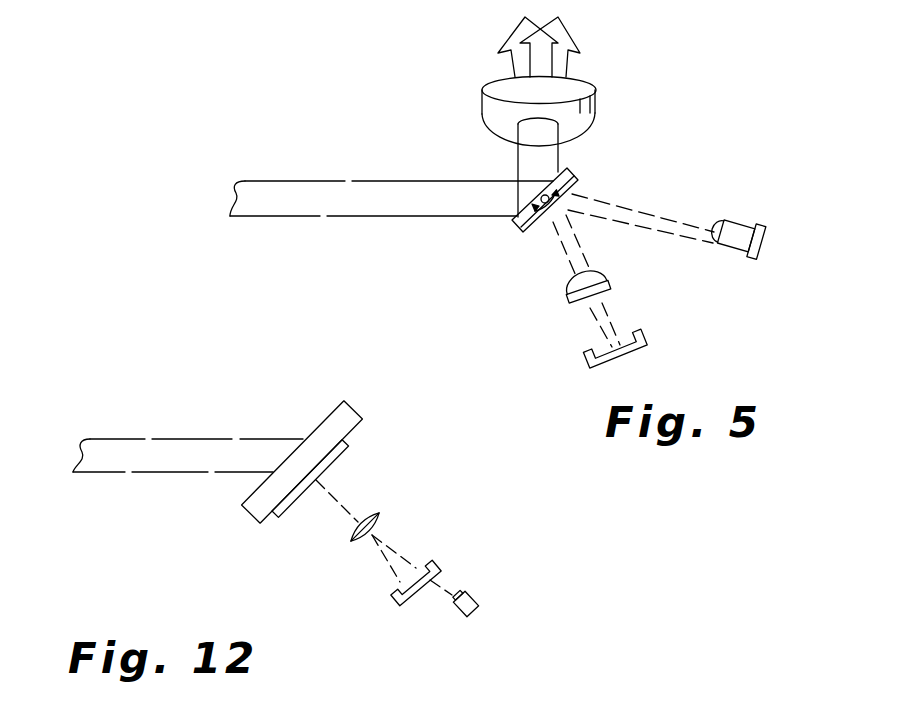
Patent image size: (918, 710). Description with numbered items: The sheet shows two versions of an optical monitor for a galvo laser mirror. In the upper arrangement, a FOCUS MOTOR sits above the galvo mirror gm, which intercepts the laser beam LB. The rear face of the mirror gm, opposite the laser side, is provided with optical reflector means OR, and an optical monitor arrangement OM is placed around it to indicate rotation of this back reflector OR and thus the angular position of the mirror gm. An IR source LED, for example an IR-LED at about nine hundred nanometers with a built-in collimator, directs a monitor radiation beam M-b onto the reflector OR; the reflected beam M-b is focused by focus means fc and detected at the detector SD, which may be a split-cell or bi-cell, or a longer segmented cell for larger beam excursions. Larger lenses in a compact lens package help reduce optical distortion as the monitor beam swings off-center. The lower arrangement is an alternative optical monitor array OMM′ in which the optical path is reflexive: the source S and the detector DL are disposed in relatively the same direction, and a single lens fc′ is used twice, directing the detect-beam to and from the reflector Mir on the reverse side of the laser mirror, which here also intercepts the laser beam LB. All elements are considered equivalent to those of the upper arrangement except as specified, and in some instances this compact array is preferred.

In FIG. 5, the focus motor FOCUS MOTOR is at (596, 102).
In FIG. 5, the laser beam LB is at (322, 181).
In FIG. 12, the laser beam LB is at (130, 437).
In FIG. 5, the galvo mirror gm is at (577, 176).
In FIG. 5, the optical reflector means OR is at (541, 232).
In FIG. 5, the optical monitor arrangement OM is at (718, 153).
In FIG. 5, the monitor radiation beam M-b is at (648, 211).
In FIG. 5, the source LED is at (736, 226).
In FIG. 5, the focus means fc is at (568, 304).
In FIG. 5, the detector SD is at (650, 340).
In FIG. 12, the reflector Mir is at (287, 512).
In FIG. 12, the optical monitor array OMM′ is at (502, 447).
In FIG. 12, the lens fc′ is at (353, 540).
In FIG. 12, the detector DL is at (408, 605).
In FIG. 12, the source S is at (473, 612).